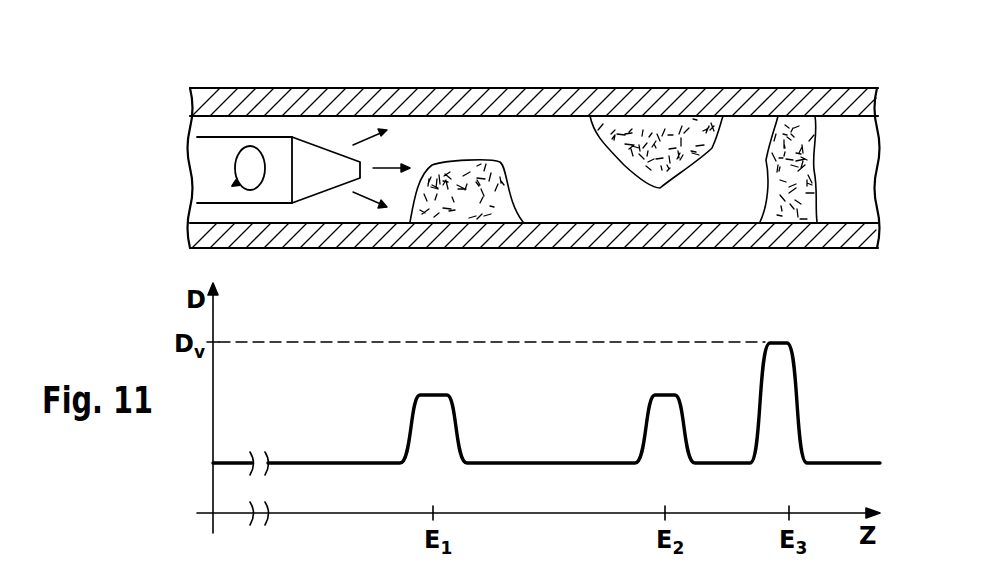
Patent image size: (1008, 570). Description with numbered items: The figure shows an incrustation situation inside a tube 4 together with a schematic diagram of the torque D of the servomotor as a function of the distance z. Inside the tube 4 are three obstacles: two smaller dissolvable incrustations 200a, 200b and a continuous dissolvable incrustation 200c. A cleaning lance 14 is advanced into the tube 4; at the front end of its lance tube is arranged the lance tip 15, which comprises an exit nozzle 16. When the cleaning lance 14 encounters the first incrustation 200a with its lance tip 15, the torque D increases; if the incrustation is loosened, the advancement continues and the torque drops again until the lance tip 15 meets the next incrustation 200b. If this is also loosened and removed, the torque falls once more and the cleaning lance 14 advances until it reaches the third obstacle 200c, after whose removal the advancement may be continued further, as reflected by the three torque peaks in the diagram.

The tube 4 is at (435, 100).
The cleaning lance 14 is at (218, 140).
The lance tip 15 is at (351, 123).
The exit nozzle 16 is at (323, 165).
The incrustation 200a is at (465, 210).
The incrustation 200b is at (672, 125).
The continuous dissolvable incrustation 200c is at (785, 210).